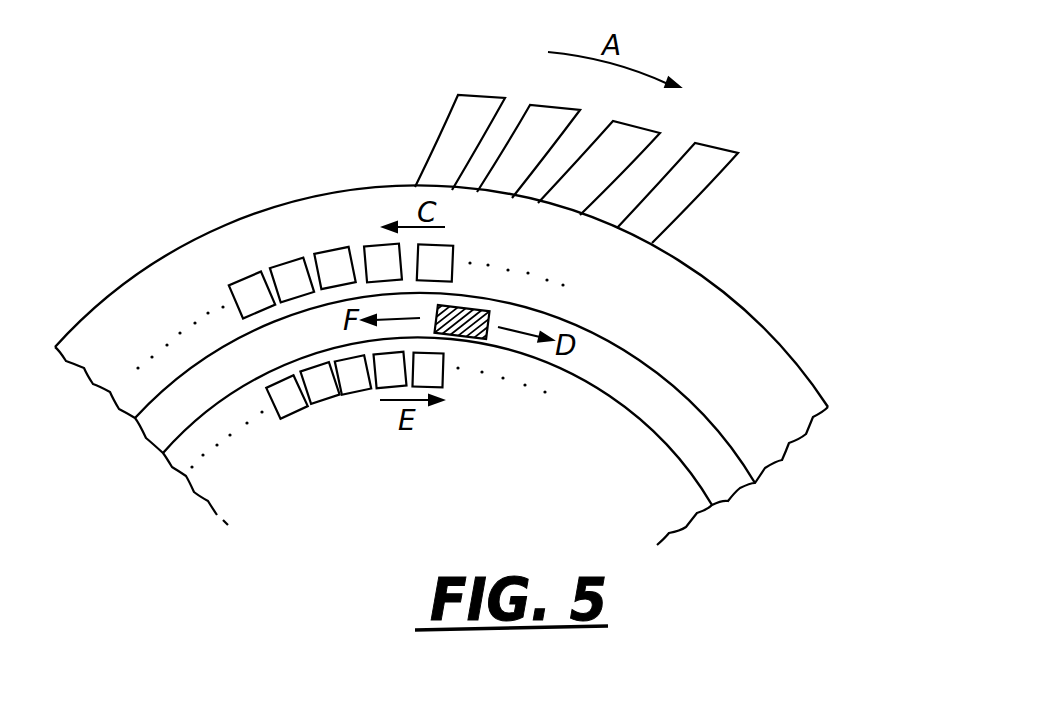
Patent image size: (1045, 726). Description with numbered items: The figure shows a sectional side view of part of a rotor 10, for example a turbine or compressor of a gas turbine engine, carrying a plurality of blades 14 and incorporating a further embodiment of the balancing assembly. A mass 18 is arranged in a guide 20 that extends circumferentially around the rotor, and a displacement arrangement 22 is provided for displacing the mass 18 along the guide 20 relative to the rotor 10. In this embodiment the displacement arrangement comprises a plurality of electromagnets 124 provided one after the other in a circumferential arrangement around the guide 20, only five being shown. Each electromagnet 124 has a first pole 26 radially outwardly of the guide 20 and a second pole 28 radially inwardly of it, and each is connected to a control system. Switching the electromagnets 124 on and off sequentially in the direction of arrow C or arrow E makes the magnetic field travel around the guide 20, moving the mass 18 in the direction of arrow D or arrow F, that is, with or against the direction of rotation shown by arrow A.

The rotor 10 is at (315, 542).
The blades 14 is at (448, 128).
The mass 18 is at (473, 337).
The guide arrangement 20 is at (677, 390).
The displacement arrangement 22 is at (305, 200).
The first pole 26 is at (240, 280).
The second pole 28 is at (293, 413).
The electromagnets 124 is at (332, 197).